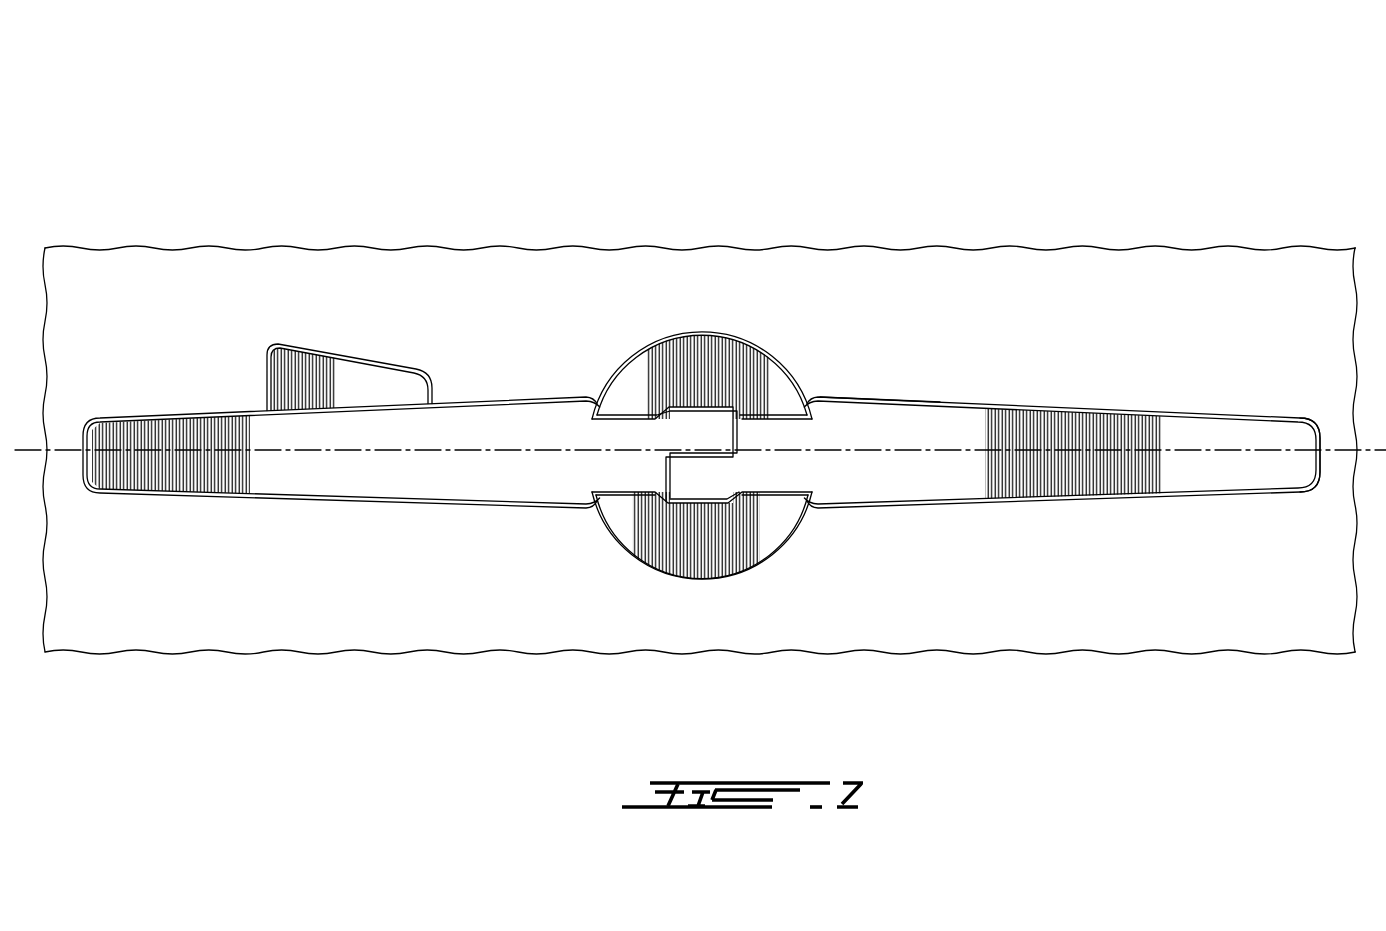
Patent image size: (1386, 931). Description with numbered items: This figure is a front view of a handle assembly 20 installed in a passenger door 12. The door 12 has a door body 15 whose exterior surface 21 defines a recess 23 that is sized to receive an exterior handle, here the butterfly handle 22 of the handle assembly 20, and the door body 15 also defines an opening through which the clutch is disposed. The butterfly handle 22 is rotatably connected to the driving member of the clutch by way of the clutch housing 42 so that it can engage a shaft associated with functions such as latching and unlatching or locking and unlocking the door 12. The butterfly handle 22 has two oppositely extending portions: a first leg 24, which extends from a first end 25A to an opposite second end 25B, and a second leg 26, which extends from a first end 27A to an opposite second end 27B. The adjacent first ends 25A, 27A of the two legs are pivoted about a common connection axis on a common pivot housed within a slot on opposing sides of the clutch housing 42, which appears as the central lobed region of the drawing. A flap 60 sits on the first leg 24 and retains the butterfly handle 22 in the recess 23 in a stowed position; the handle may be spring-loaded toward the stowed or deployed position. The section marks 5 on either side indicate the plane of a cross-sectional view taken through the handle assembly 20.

The section line 5- 5 is at (25, 490).
The passenger door 12 is at (1256, 156).
The door body 15 is at (1033, 248).
The handle assembly 20 is at (1147, 346).
The exterior surface 21 is at (113, 307).
The butterfly handle 22 is at (947, 405).
The recess 23 is at (877, 397).
The first leg 24 is at (489, 425).
The first end of first leg 25A is at (699, 394).
The second end of first leg 25B is at (117, 407).
The second leg 26 is at (1033, 425).
The first end of second leg 27A is at (700, 521).
The second end of second leg 27B is at (1266, 503).
The clutch housing 42 is at (640, 368).
The flap 60 is at (352, 373).